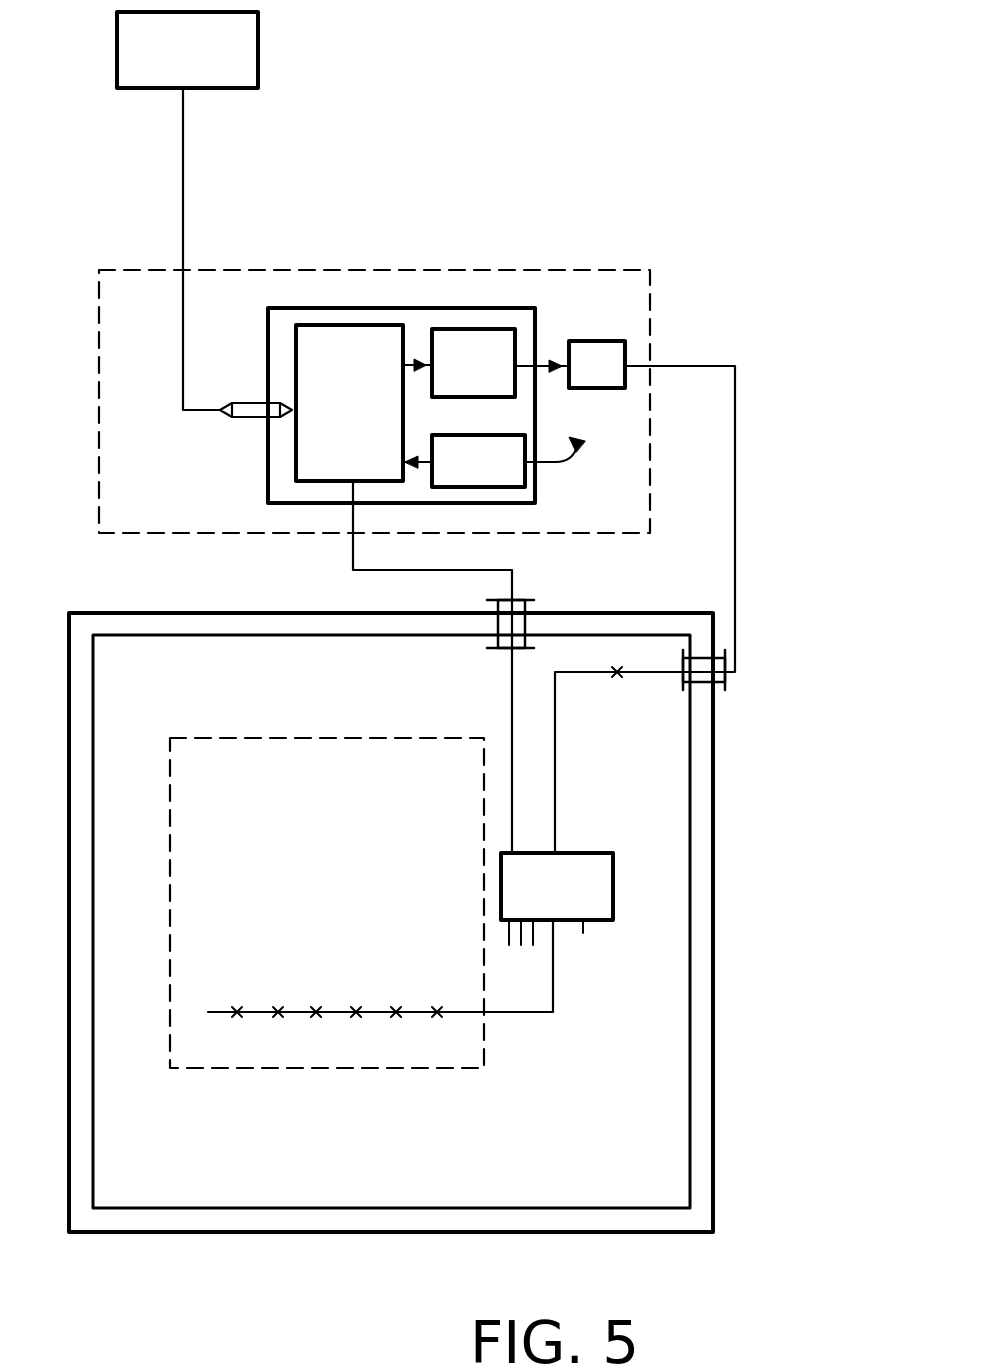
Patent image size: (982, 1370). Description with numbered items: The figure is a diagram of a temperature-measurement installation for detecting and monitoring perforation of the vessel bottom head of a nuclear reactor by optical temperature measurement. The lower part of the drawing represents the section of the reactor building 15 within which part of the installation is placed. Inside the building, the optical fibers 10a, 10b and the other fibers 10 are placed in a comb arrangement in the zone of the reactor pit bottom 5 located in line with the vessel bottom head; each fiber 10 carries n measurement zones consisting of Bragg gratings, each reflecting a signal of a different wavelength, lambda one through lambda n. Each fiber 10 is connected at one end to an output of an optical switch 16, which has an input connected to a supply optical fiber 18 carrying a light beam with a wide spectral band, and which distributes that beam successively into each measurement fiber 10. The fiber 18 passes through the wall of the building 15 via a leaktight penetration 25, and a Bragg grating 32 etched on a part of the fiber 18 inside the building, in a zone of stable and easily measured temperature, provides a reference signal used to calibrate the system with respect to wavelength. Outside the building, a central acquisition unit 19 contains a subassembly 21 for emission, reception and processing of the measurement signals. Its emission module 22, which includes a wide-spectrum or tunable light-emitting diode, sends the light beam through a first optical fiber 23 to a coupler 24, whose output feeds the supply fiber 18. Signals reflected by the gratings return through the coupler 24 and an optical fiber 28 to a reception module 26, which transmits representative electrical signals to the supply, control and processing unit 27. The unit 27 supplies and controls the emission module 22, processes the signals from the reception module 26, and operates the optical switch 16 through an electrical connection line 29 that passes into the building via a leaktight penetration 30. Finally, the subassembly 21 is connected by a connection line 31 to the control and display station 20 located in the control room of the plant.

The reactor pit bottom 5 is at (542, 1126).
The measurement optical fiber 10 is at (555, 985).
The optical fiber 10a is at (583, 942).
The optical fiber 10b is at (580, 935).
The reactor building 15 is at (703, 867).
The optical switch 16 is at (590, 888).
The supply optical fiber 18 is at (735, 412).
The central acquisition unit 19 is at (525, 270).
The control and display station 20 is at (258, 52).
The emission, reception and processing subassembly 21 is at (305, 308).
The emission module 22 is at (470, 358).
The first optical fiber 23 is at (540, 366).
The coupler 24 is at (602, 341).
The leaktight penetration 25 is at (725, 684).
The reception module 26 is at (505, 487).
The supply, control and processing unit 27 is at (302, 448).
The optical fiber 28 is at (577, 447).
The electrical connection line 29 is at (353, 565).
The leaktight penetration 30 is at (516, 624).
The connection line 31 is at (183, 202).
The Bragg grating 32 is at (583, 675).